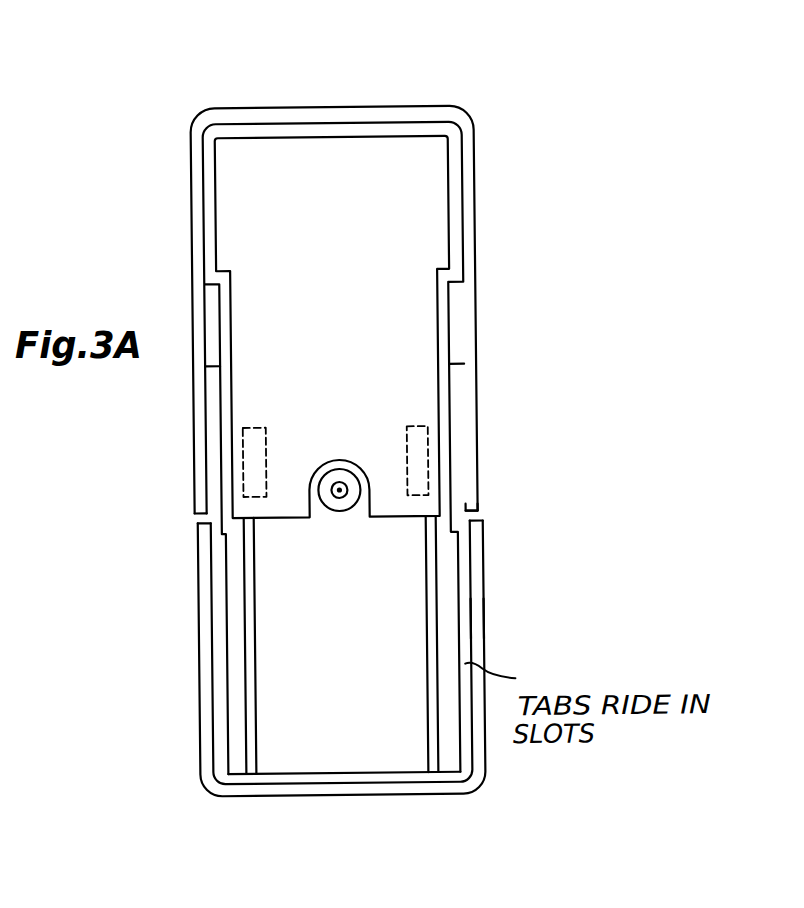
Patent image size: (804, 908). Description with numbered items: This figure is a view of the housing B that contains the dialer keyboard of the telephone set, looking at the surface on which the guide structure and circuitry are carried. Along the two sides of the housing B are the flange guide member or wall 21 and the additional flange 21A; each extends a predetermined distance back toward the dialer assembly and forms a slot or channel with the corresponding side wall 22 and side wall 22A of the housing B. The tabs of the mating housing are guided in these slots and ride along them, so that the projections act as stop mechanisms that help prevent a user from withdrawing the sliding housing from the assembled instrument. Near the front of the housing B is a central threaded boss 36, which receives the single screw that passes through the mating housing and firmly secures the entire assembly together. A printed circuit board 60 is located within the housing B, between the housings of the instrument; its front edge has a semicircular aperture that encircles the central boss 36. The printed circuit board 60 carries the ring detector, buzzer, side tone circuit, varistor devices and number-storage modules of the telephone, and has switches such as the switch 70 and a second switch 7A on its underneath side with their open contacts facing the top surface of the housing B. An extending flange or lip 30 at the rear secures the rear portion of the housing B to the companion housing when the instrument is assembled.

The extending flange or lip 30 is at (402, 132).
The printed circuit board 60 is at (397, 281).
The threaded boss 36 is at (340, 503).
The switch 70 is at (251, 427).
The right tab 7A is at (418, 427).
The housing B is at (481, 473).
The side wall 22 is at (203, 678).
The side wall 22A is at (482, 621).
The flange guide member or wall 21 is at (252, 678).
The flange 21A is at (433, 658).